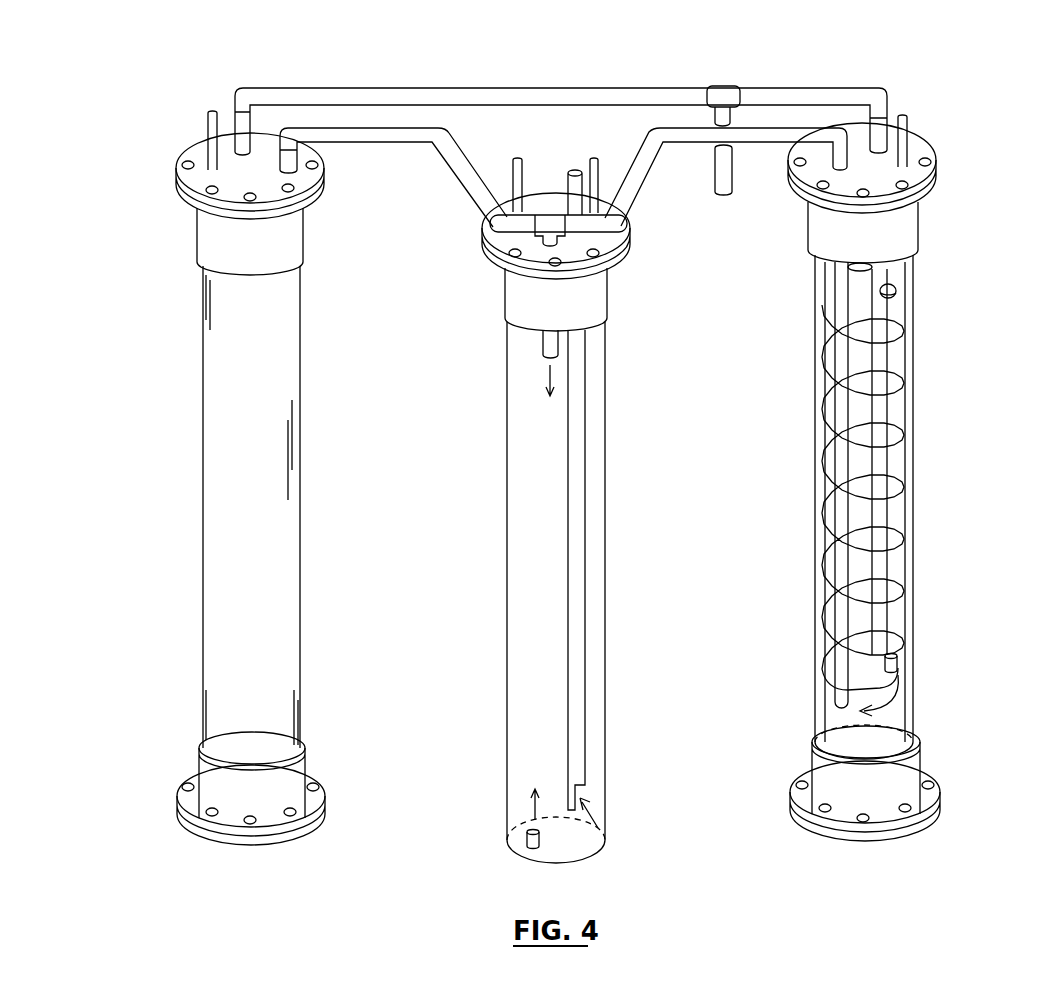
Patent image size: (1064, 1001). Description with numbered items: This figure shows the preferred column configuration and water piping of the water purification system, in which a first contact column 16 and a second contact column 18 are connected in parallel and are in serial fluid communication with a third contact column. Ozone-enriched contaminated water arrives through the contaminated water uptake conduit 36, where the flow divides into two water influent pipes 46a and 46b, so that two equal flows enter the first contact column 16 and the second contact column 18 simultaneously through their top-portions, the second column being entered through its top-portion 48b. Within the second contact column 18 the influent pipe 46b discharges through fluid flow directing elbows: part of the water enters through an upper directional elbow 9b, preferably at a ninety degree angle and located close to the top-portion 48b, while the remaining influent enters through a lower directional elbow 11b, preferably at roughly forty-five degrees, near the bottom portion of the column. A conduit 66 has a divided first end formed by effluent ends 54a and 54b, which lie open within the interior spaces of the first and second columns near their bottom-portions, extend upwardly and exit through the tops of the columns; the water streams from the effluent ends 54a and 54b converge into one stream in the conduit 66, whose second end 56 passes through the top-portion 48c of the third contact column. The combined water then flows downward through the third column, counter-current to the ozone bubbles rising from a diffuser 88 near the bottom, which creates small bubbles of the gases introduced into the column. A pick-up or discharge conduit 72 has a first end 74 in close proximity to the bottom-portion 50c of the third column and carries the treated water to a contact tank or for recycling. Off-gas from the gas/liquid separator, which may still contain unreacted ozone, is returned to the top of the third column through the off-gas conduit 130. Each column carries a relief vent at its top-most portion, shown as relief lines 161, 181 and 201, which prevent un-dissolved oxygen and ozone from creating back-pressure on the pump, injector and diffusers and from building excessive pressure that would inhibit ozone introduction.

The first contact column 16 is at (205, 400).
The relief vent 161 is at (205, 127).
The water influent pipe 46a is at (240, 152).
The effluent end of conduit 66 54a is at (295, 165).
The water influent pipe 46b is at (888, 110).
The relief vent 181 is at (910, 150).
The contaminated water uptake conduit 36 is at (731, 195).
The top-portion of third contact column 48c is at (559, 461).
The relief vent 201 is at (513, 162).
The pick-up or discharge conduit 72 is at (573, 172).
The off-gas conduit 130 is at (592, 160).
The conduit 66 is at (548, 245).
The second end of conduit 66 56 is at (548, 356).
The first end of discharge conduit 72 74 is at (586, 768).
The bottom-portion of third contact column 50c is at (598, 800).
The diffuser 88 is at (545, 840).
The top-portion of second contact column 48b is at (873, 482).
The effluent end of conduit 66 54b is at (842, 293).
The upper directional elbow 9b is at (897, 292).
The second contact column 18 is at (913, 310).
The lower directional elbow 11b is at (910, 663).